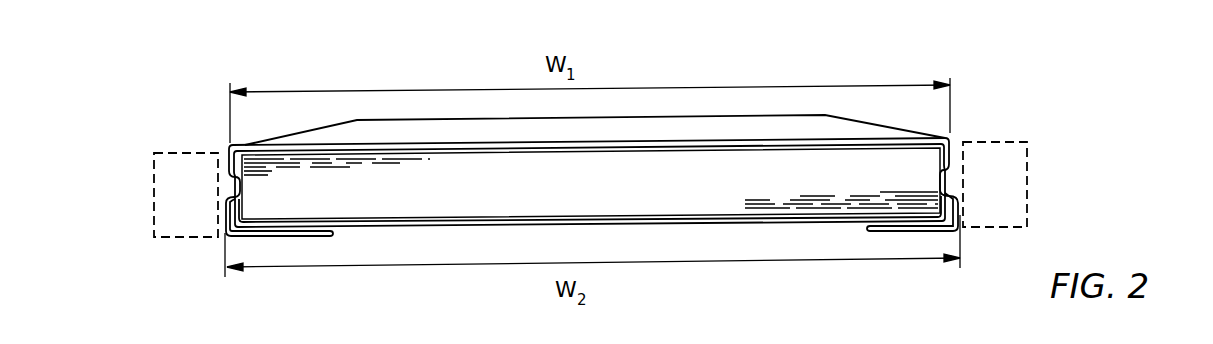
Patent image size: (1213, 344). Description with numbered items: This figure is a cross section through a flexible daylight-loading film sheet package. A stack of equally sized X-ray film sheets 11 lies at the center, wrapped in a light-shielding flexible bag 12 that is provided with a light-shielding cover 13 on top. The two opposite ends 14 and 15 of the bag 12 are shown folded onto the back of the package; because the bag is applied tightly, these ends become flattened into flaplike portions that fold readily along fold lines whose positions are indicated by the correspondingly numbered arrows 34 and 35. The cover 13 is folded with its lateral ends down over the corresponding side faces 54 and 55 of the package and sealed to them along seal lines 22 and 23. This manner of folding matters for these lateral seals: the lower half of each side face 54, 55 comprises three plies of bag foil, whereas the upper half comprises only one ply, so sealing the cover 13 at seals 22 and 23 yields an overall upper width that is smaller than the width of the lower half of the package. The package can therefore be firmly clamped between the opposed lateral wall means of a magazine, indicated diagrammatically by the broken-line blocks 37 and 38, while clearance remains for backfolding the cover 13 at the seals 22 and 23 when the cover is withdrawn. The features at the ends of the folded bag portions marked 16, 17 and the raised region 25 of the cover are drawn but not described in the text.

The X-ray film sheets 11 is at (575, 192).
The light-shielding flexible bag 12 is at (515, 222).
The light-shielding cover 13 is at (437, 143).
The end of the bag 14 is at (292, 236).
The end of the bag 15 is at (912, 232).
The end of left lip 16 is at (314, 237).
The end of right lip 17 is at (862, 229).
The seal line 22 is at (229, 163).
The seal line 23 is at (962, 153).
The raised rib of top plate 25 is at (693, 103).
The fold line 34 is at (207, 205).
The fold line 35 is at (983, 185).
The lateral wall means of a magazine 37 is at (155, 227).
The lateral wall means of a magazine 38 is at (1027, 214).
The side face of the package 54 is at (238, 178).
The side face of the package 55 is at (963, 163).